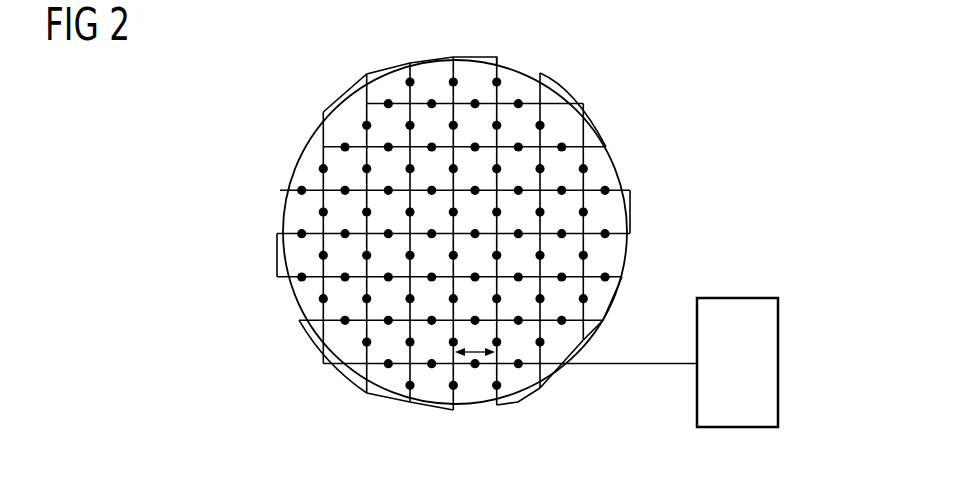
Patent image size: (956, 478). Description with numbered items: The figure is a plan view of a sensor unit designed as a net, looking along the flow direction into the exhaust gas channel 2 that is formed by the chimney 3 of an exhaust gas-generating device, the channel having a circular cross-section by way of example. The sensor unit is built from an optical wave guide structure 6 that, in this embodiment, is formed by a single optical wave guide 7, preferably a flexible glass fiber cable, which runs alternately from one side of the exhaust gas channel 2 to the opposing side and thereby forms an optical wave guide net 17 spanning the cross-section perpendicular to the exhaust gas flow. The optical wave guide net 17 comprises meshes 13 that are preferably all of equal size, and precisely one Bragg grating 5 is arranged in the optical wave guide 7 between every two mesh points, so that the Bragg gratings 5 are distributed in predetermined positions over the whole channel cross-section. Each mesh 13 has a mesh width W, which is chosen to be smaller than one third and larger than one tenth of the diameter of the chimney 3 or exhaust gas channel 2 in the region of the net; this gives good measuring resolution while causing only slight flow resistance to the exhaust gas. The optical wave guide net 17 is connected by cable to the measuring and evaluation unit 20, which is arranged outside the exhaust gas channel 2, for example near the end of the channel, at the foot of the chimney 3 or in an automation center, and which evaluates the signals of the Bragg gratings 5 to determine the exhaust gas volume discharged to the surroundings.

The exhaust gas channel 2 is at (299, 296).
The chimney 3 is at (283, 257).
The Bragg grating 5 is at (560, 150).
The optical wave guide structure 6 is at (333, 92).
The optical wave guide 7 is at (321, 211).
The mesh 13 is at (540, 143).
The optical wave guide net 17 is at (611, 249).
The measuring and evaluation unit 20 is at (778, 386).
The mesh width W is at (483, 354).